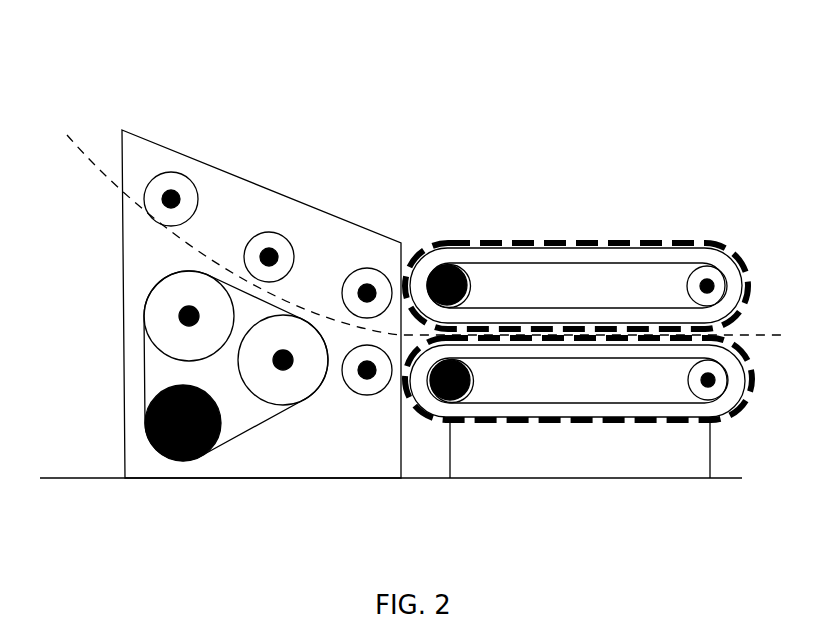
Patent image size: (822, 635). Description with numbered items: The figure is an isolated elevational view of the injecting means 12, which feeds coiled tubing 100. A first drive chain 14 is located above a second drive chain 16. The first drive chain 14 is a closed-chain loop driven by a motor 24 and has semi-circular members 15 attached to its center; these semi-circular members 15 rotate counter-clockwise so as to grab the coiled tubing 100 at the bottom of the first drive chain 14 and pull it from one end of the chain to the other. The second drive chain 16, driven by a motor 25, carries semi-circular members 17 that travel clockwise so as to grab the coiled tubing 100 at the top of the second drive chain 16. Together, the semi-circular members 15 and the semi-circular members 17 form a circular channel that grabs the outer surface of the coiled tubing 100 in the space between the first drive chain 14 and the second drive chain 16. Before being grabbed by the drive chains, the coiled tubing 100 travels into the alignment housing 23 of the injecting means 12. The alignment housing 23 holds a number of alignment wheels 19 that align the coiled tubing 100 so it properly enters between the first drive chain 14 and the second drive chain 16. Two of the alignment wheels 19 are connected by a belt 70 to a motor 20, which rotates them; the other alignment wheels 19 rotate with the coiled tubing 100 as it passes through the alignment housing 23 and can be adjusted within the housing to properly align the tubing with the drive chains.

The injecting means 12 is at (247, 57).
The coiled tubing 100 is at (91, 160).
The alignment wheels 19 is at (188, 185).
The alignment housing 23 is at (328, 232).
The motor 24 is at (432, 270).
The semi-circular members 15 is at (629, 243).
The first drive chain 14 is at (692, 258).
The motor 25 is at (471, 381).
The second drive chain 16 is at (742, 404).
The semi-circular members 17 is at (618, 423).
The belt 70 is at (263, 423).
The motor 20 is at (200, 457).